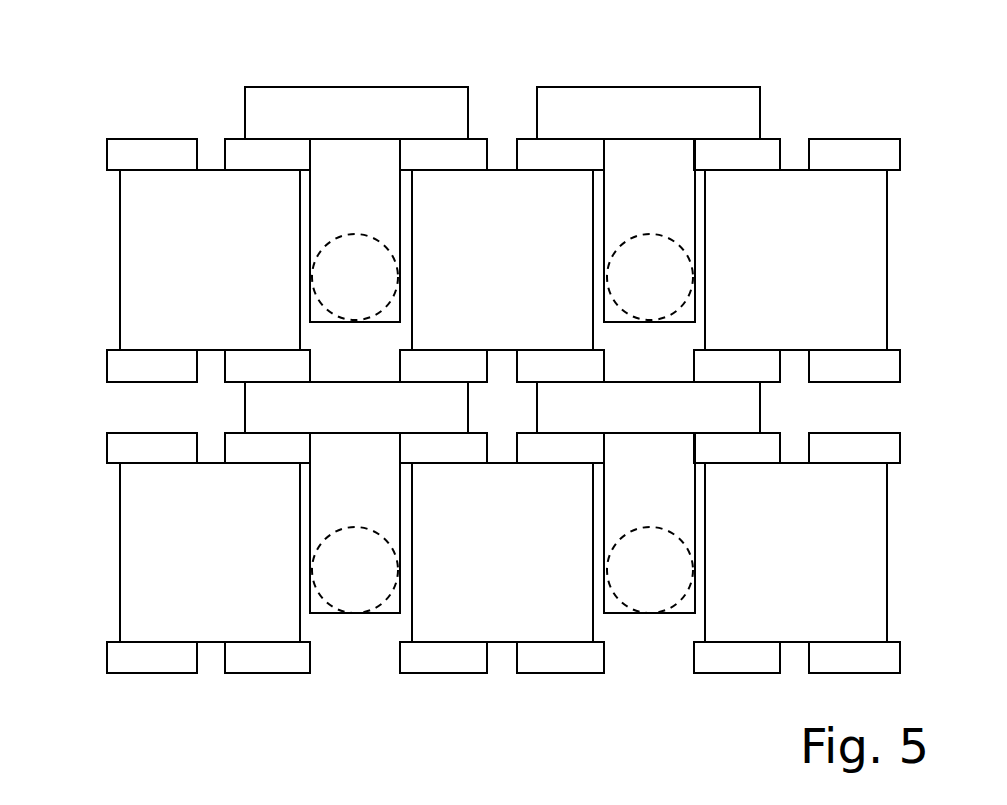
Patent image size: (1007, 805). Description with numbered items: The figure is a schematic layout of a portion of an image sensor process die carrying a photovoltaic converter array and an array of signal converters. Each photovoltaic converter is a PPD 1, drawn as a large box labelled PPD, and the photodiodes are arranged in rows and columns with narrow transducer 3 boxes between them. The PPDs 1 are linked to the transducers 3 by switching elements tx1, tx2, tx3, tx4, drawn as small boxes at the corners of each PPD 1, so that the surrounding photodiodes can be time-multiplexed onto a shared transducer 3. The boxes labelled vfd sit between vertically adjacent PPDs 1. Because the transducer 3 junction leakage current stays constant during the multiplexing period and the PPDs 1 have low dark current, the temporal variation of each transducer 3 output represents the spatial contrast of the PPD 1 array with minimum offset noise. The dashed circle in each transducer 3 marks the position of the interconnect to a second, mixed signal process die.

The PPD 1 is at (490, 391).
The transducer 3 is at (532, 385).
The switching element tx1 is at (503, 406).
The switching element tx2 is at (503, 406).
The switching element tx3 is at (503, 406).
The switching element tx4 is at (503, 406).
The element PPD is at (503, 406).
The floating diffusion vfd is at (502, 260).